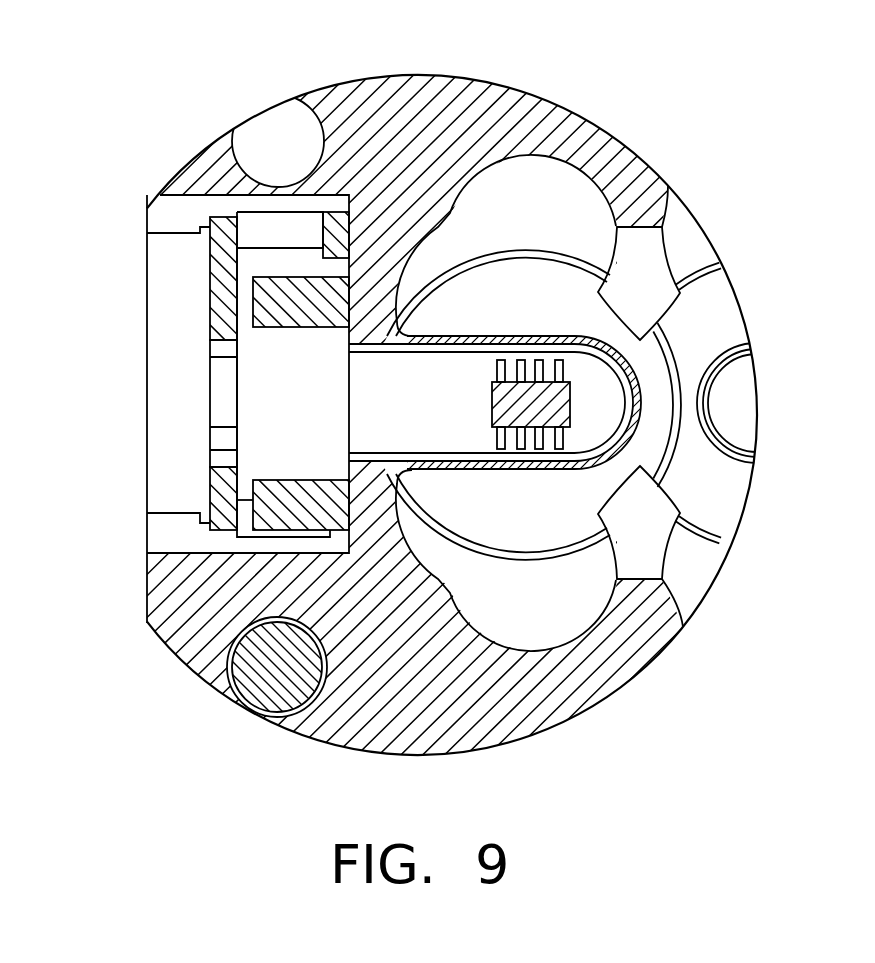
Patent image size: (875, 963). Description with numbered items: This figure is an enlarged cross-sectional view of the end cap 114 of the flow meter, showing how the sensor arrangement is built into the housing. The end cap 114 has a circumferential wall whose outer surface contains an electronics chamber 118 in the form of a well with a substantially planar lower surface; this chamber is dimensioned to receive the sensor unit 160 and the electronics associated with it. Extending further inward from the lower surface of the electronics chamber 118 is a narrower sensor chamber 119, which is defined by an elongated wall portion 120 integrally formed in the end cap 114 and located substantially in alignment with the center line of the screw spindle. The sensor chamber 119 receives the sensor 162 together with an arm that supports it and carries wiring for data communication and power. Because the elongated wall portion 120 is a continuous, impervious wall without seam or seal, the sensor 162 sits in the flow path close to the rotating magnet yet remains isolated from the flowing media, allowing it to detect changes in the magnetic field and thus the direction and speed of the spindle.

The end cap 114 is at (343, 84).
The electronics chamber 118 is at (165, 218).
The sensor chamber 119 is at (382, 385).
The elongated wall portion 120 is at (620, 383).
The sensor unit 160 is at (227, 428).
The sensor 162 is at (563, 375).